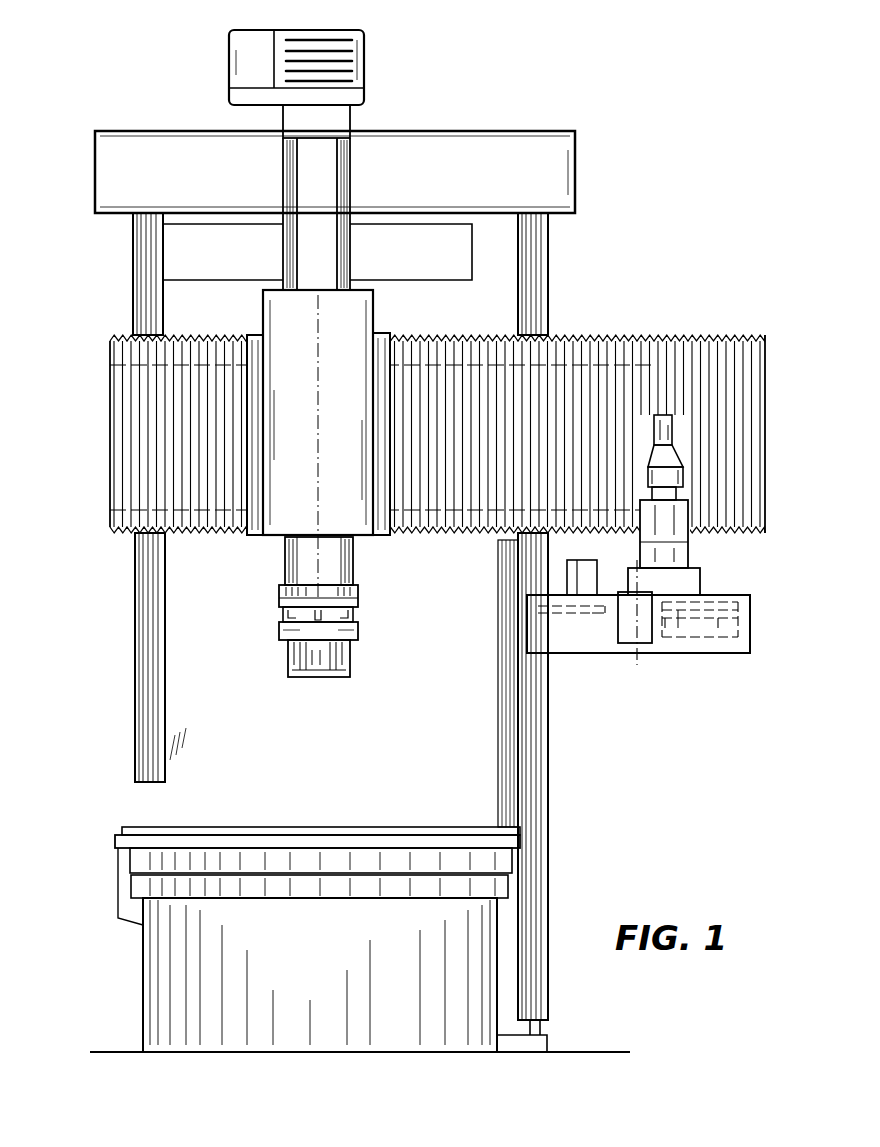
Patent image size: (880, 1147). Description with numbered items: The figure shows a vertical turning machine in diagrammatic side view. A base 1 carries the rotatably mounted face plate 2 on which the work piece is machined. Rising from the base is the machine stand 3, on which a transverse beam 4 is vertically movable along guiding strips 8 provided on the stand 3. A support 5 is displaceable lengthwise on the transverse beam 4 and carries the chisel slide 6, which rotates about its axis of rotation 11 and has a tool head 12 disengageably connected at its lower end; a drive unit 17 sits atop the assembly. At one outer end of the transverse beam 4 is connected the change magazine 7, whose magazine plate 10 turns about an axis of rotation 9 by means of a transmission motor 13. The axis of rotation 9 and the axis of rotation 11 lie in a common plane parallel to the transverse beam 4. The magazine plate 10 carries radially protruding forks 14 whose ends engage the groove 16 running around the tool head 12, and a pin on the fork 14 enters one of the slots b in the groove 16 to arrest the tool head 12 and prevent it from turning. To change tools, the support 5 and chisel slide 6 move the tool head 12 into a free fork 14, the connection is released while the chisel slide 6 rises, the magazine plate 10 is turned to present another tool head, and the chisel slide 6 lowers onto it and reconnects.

The base 1 is at (357, 1018).
The face plate 2 is at (185, 828).
The machine stand 3 is at (205, 703).
The transverse beam 4 is at (578, 324).
The support 5 is at (360, 316).
The chisel slide 6 is at (357, 567).
The change magazine 7 is at (722, 590).
The guiding strips 8 is at (150, 258).
The axis of rotation 9 is at (637, 665).
The magazine plate 10 is at (624, 632).
The axis of rotation 11 is at (335, 462).
The tool head 12 is at (375, 659).
The transmission motor 13 is at (672, 440).
The fork 14 is at (678, 612).
The groove 16 is at (358, 616).
The drive motor 17 is at (355, 45).
The slot b is at (283, 616).